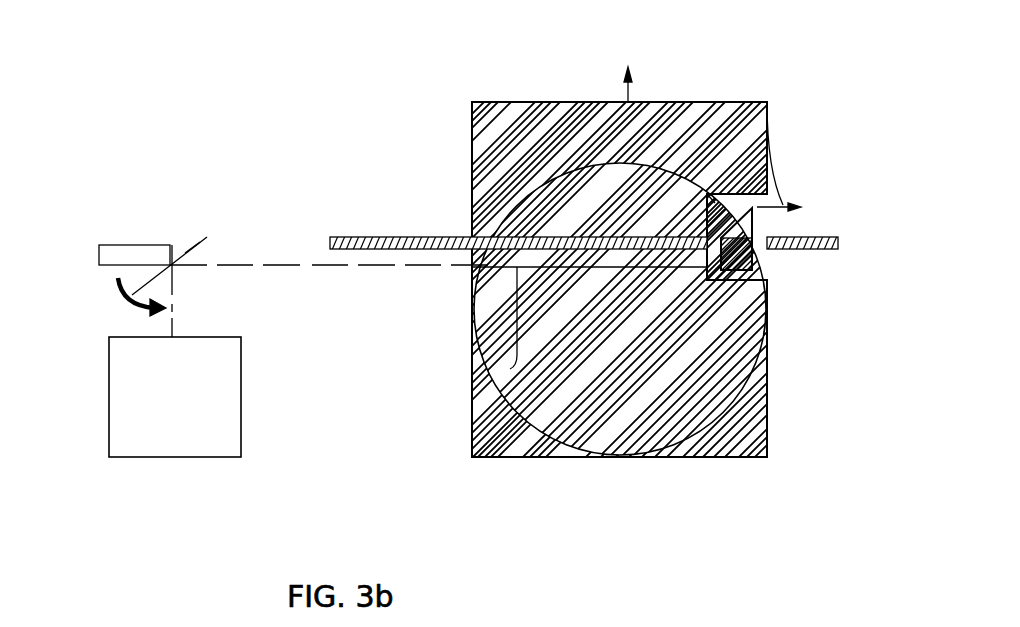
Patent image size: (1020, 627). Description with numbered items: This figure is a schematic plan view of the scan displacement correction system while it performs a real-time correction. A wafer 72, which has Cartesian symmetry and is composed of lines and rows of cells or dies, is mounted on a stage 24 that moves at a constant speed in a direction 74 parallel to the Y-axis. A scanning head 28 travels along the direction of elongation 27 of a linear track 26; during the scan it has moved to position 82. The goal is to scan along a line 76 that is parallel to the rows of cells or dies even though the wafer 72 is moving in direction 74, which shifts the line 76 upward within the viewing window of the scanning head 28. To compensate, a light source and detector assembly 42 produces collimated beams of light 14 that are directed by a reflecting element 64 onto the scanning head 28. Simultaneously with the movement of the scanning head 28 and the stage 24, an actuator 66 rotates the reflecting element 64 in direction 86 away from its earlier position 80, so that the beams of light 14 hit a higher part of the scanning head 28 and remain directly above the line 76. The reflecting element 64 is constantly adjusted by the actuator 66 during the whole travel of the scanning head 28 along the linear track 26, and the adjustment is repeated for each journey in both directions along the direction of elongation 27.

The collimated beams of light 14 is at (290, 268).
The stage 24 is at (748, 438).
The linear track 26 is at (838, 244).
The direction of elongation 27 is at (767, 102).
The scanning head 28 is at (702, 192).
The light source and detector assembly 42 is at (222, 393).
The reflecting element 64 is at (207, 237).
The actuator 66 is at (107, 250).
The wafer 72 is at (482, 317).
The direction 74 is at (630, 87).
The line 76 is at (480, 405).
The position 80 is at (195, 243).
The position 82 is at (737, 206).
The direction 86 is at (160, 310).